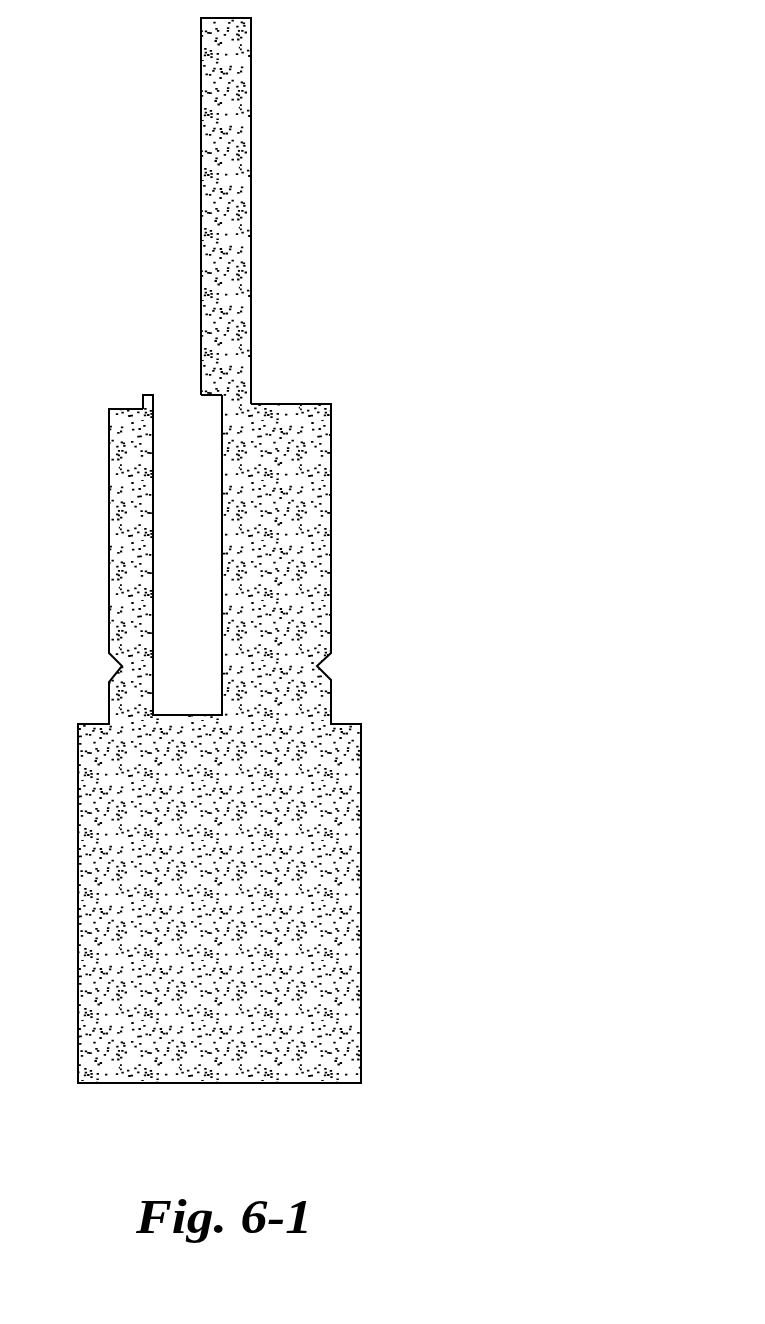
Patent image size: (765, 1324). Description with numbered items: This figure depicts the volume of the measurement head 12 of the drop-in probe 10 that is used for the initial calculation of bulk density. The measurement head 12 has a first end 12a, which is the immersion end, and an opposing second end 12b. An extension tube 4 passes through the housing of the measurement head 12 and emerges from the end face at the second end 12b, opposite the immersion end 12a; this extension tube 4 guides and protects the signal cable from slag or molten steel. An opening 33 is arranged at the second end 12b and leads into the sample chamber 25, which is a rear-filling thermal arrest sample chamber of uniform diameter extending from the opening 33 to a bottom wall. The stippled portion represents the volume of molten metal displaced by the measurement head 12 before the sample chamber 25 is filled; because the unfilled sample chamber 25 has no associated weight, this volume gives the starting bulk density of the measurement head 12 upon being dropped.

The drop-in probe 10 is at (398, 243).
The extension tube 4 is at (237, 157).
The measurement head 12 is at (331, 523).
The first end 12a is at (124, 1084).
The second end 12b is at (122, 409).
The opening 33 is at (172, 398).
The sample chamber 25 is at (180, 585).